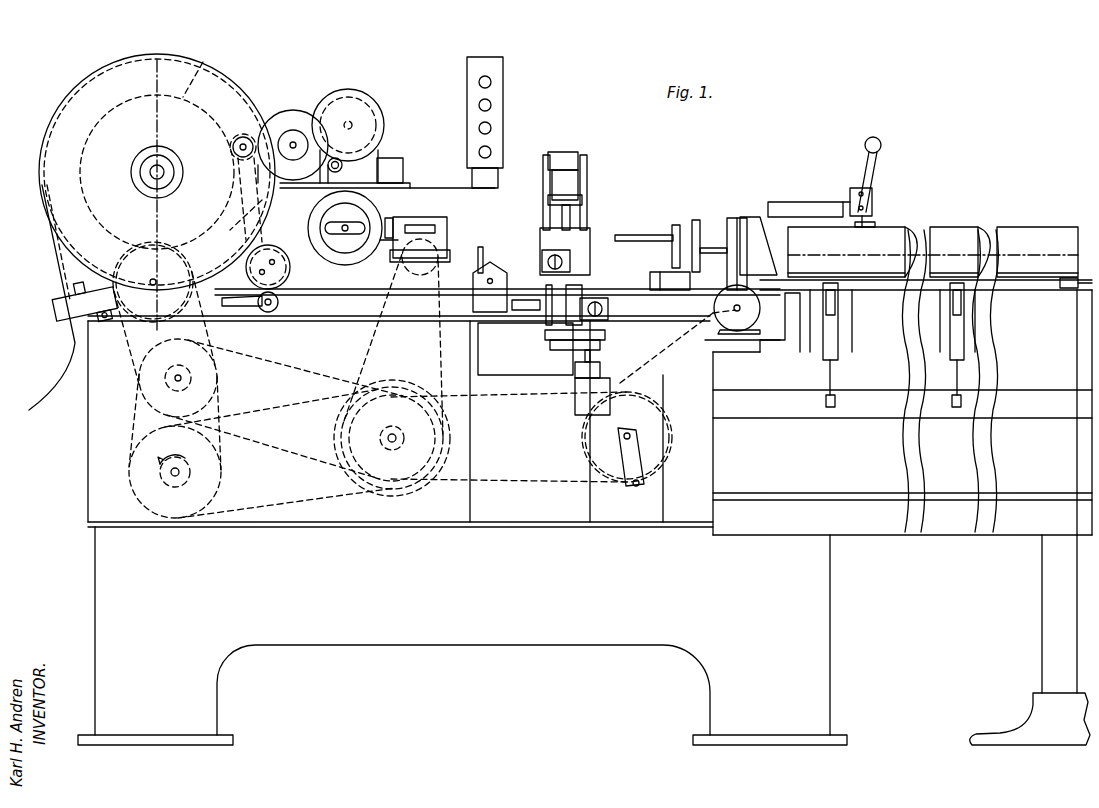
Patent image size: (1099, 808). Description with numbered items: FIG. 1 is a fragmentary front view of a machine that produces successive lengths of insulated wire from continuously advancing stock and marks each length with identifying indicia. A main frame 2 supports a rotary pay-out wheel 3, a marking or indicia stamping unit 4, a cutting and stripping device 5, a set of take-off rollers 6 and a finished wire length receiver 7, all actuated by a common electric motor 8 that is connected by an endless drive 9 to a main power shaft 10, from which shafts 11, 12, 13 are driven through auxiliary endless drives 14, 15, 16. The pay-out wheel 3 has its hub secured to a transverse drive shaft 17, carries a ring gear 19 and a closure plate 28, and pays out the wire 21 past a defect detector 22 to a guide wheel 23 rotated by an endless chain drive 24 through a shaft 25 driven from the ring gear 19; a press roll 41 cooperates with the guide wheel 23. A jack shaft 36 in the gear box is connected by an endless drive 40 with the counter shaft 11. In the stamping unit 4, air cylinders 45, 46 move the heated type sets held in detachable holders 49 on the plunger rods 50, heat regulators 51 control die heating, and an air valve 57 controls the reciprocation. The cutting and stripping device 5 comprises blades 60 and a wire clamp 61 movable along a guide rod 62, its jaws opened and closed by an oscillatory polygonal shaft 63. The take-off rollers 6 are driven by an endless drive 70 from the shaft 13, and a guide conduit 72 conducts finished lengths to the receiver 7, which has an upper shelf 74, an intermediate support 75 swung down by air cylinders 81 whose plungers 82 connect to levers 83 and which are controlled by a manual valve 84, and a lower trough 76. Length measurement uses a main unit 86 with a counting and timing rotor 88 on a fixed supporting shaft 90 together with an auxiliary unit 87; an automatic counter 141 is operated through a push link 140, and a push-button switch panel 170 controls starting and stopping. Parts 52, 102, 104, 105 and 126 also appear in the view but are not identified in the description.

The main frame 2 is at (584, 530).
The pay-out wheel 3 is at (70, 92).
The marking or indicia stamping unit 4 is at (580, 163).
The cutting and stripping device 5 is at (700, 225).
The take-off rollers 6 is at (718, 298).
The finished wire length receiver 7 is at (902, 412).
The electric motor 8 is at (157, 60).
The endless drive 9 is at (282, 486).
The main power shaft 10 is at (394, 436).
The counter shaft 11 is at (145, 367).
The shaft 12 is at (405, 268).
The drive shaft 13 is at (627, 430).
The auxiliary endless drive 14 is at (293, 380).
The auxiliary endless drive 15 is at (378, 355).
The auxiliary endless drive 16 is at (535, 470).
The transverse drive shaft 17 is at (156, 172).
The ring gear 19 is at (210, 62).
The insulated wire 21 is at (66, 360).
The defect detector 22 is at (56, 309).
The guide wheel 23 is at (290, 272).
The endless chain drive 24 is at (246, 228).
The shaft 25 is at (232, 147).
The closure plate 28 is at (62, 191).
The jack shaft 36 is at (153, 282).
The endless drive 40 is at (195, 332).
The press roll 41 is at (266, 310).
The air cylinder 45 is at (555, 181).
The air cylinder 46 is at (580, 402).
The detachable holders 49 is at (532, 289).
The plunger rods 50 is at (562, 215).
The heat regulators 51 is at (542, 258).
The guide posts 52 is at (550, 318).
The air valve 57 is at (490, 279).
The cutting and stripping blades 60 is at (665, 278).
The wire clamp 61 is at (676, 228).
The guide rod 62 is at (632, 230).
The oscillatory polygonal shaft 63 is at (735, 228).
The endless drive 70 is at (698, 400).
The guide conduit 72 is at (758, 284).
The upper shelf 74 is at (1068, 290).
The intermediate support 75 is at (1058, 378).
The lower trough 76 is at (972, 484).
The air cylinders 81 is at (838, 345).
The plungers 82 is at (832, 374).
The levers 83 is at (830, 422).
The manually manipulable valve 84 is at (834, 198).
The main length measuring unit 86 is at (354, 96).
The auxiliary unit 87 is at (330, 218).
The counting and timing rotor 88 is at (385, 115).
The fixed supporting shaft 90 is at (345, 114).
The block 102 is at (395, 168).
The strip 104 is at (242, 160).
The pulley 105 is at (273, 112).
The roller 126 is at (351, 169).
The push link 140 is at (394, 222).
The automatic counter 141 is at (440, 218).
The push-button switch panel 170 is at (503, 98).